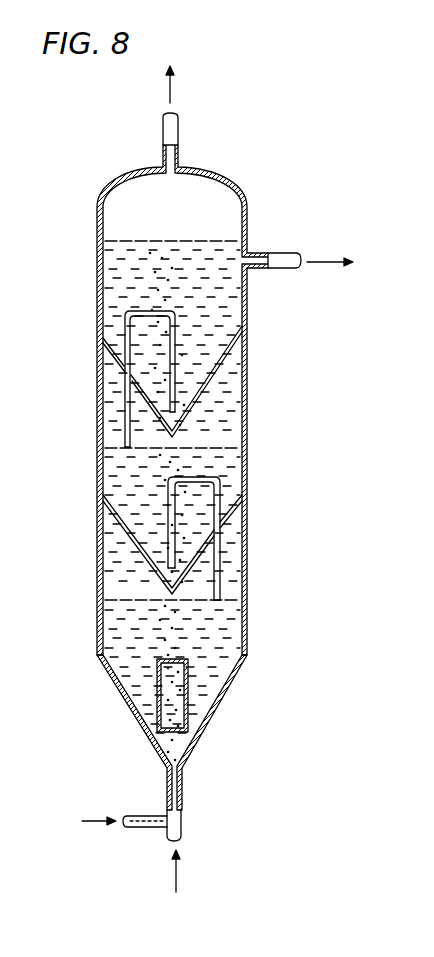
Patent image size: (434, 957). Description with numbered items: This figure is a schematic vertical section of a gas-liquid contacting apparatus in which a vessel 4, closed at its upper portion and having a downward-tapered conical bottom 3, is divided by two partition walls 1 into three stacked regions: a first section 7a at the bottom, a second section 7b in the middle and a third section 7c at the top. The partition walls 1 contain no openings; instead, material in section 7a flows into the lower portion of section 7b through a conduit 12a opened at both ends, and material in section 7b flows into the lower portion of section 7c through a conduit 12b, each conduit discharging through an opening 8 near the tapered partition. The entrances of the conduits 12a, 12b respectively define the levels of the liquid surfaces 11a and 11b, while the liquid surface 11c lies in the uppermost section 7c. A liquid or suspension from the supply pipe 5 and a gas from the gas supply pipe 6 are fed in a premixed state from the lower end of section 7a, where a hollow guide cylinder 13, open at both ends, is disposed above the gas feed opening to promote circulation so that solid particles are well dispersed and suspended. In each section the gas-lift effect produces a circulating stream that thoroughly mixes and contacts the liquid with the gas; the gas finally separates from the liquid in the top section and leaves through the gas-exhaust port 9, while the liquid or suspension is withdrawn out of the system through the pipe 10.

The partition wall 1 is at (219, 371).
The conical bottom 3 is at (208, 724).
The vessel 4 is at (97, 213).
The supply pipe 5 is at (140, 823).
The gas supply pipe 6 is at (181, 832).
The first section 7a is at (118, 663).
The second section 7b is at (127, 502).
The third section 7c is at (113, 282).
The opening 8 is at (125, 443).
The gas-exhaust port 9 is at (172, 132).
The pipe 10 is at (281, 265).
The liquid surface 11a is at (122, 598).
The liquid surface 11b is at (103, 449).
The liquid surface 11c is at (101, 244).
The conduit 12a is at (220, 488).
The conduit 12b is at (125, 326).
The hollow guide cylinder 13 is at (188, 686).